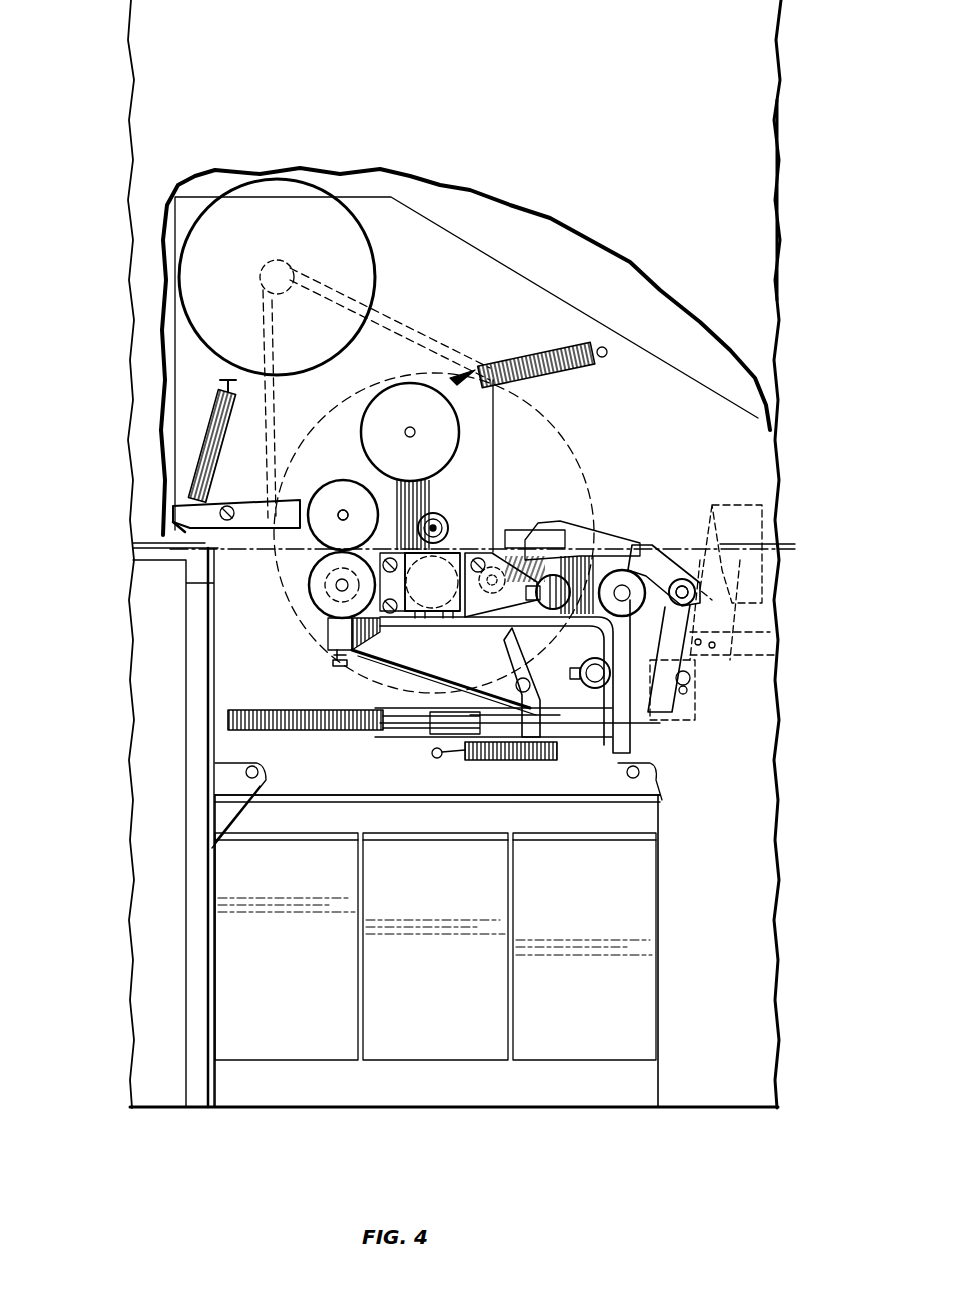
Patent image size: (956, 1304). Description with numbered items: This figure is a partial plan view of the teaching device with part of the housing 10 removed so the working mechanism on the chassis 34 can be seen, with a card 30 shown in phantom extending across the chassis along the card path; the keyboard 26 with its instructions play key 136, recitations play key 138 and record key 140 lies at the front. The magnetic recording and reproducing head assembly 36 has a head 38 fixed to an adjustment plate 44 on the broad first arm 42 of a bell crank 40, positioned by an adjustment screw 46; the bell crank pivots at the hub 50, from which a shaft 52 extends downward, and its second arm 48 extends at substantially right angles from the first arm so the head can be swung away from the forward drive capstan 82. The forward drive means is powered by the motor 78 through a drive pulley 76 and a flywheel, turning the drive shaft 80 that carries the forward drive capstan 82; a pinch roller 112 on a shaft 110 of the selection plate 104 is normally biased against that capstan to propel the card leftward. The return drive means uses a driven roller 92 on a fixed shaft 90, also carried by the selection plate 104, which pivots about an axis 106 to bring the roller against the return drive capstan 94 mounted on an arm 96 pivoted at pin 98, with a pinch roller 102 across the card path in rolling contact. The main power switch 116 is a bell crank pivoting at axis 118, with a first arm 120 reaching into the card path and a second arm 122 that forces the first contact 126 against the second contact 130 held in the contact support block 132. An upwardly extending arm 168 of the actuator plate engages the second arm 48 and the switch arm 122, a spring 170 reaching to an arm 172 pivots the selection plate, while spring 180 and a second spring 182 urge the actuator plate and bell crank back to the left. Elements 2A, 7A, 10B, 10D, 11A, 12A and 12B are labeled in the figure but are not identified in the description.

The housing 10 is at (783, 71).
The table 2A is at (165, 535).
The drive belt 7A is at (412, 295).
The tension spring 10B is at (555, 350).
The tension spring 10D is at (215, 398).
The adjusting screw 11A is at (330, 662).
The pin 12A is at (690, 676).
The pin 12B is at (688, 690).
The keyboard 26 is at (522, 1076).
The card 30 is at (800, 548).
The chassis 34 is at (437, 223).
The magnetic recording and reproducing head assembly 36 is at (515, 650).
The magnetic recording and reproducing head 38 is at (470, 560).
The bell crank 40 is at (607, 627).
The first arm 42 is at (495, 548).
The adjustment plate 44 is at (460, 568).
The adjustment screw 46 is at (555, 610).
The second arm 48 is at (612, 700).
The hub 50 is at (622, 585).
The shaft 52 is at (665, 592).
The drive pulley 76 is at (280, 268).
The motor 78 is at (229, 185).
The drive shaft 80 is at (410, 490).
The forward drive capstan 82 is at (440, 515).
The fixed shaft 90 is at (410, 426).
The driven roller 92 is at (360, 440).
The return drive capstan 94 is at (352, 507).
The arm 96 is at (262, 548).
The pin 98 is at (230, 500).
The pinch roller 102 is at (310, 590).
The selection plate 104 is at (395, 668).
The axis 106 is at (485, 630).
The shaft 110 is at (492, 580).
The pinch roller 112 is at (366, 528).
The switch 116 is at (688, 580).
The axis 118 is at (690, 592).
The first arm 120 is at (586, 505).
The second arm 122 is at (660, 700).
The first contact 126 is at (775, 630).
The second contact 130 is at (775, 655).
The contact support block 132 is at (765, 540).
The instructions play key 136 is at (597, 1004).
The recitations play key 138 is at (445, 1004).
The record key 140 is at (292, 1004).
The upwardly extending arm 168 is at (590, 735).
The spring 170 is at (460, 672).
The arm 172 is at (510, 762).
The spring 180 is at (455, 755).
The second spring 182 is at (300, 735).